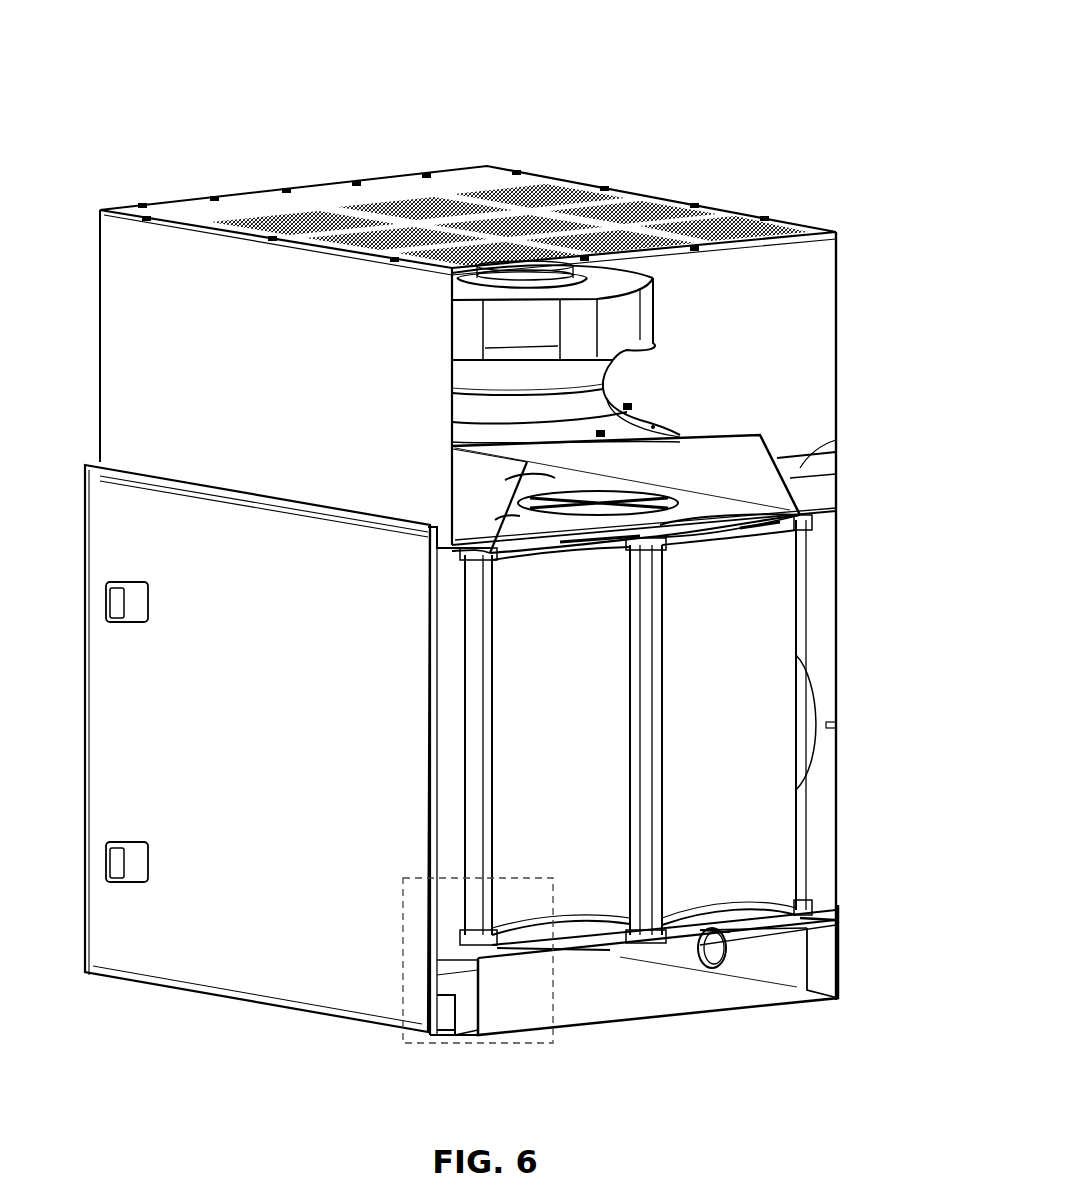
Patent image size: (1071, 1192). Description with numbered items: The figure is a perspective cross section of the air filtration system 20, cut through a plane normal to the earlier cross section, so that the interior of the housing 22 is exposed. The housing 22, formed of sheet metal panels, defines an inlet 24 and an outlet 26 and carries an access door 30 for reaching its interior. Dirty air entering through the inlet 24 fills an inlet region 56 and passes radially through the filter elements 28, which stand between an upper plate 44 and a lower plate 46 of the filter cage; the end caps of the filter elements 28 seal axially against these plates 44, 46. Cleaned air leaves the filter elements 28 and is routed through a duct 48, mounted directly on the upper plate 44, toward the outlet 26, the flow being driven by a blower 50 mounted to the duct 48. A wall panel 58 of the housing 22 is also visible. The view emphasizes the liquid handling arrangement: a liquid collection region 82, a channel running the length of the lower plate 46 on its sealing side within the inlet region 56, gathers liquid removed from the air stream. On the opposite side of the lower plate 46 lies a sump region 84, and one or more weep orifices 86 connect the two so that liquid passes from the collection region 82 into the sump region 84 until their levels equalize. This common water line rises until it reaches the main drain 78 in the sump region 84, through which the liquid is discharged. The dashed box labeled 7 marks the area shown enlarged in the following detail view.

The system 20 is at (771, 102).
The housing 22 is at (838, 416).
The inlet 24 is at (818, 677).
The outlet 26 is at (482, 172).
The filter element 28 is at (480, 718).
The access door 30 is at (115, 532).
The upper plate 44 is at (810, 506).
The lower plate 46 is at (822, 916).
The duct 48 is at (812, 454).
The blower 50 is at (615, 366).
The inlet region 56 is at (420, 655).
The housing side panel 58 is at (798, 313).
The main drain 78 is at (698, 970).
The liquid collection region 82 is at (461, 982).
The sump region 84 is at (664, 1010).
The weep orifice 86 is at (445, 983).
The detail region shown in FIG. 7 is at (527, 1043).